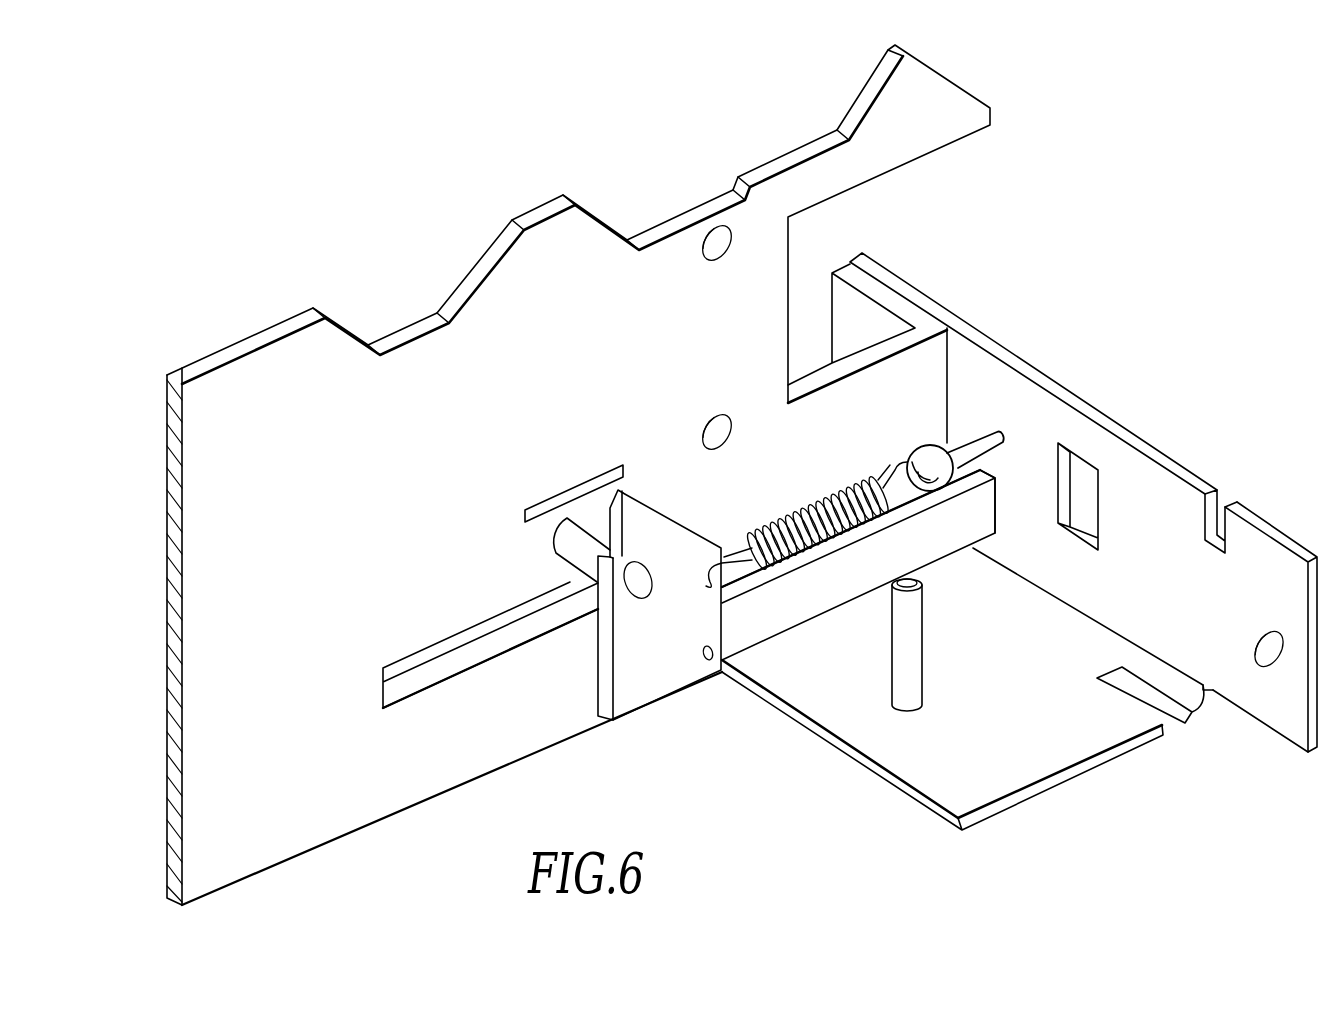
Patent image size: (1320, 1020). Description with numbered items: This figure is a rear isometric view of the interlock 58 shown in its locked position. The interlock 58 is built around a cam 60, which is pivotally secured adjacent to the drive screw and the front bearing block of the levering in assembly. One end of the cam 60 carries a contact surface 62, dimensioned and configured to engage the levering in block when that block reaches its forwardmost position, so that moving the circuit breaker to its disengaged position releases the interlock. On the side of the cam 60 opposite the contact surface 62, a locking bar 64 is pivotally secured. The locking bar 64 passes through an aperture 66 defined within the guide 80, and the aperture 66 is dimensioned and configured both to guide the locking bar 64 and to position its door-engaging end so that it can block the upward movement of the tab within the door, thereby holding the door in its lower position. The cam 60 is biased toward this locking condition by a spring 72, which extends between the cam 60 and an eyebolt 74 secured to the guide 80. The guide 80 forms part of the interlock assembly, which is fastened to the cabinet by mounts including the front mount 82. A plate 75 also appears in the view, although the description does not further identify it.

The interlock 58 is at (688, 723).
The cam 60 is at (645, 652).
The contact surface 62 is at (600, 523).
The locking bar 64 is at (785, 614).
The aperture 66 is at (1000, 503).
The spring 72 is at (806, 503).
The eyebolt 74 is at (925, 447).
The mounting plate 75 is at (360, 577).
The guide 80 is at (1140, 601).
The front mount 82 is at (998, 722).